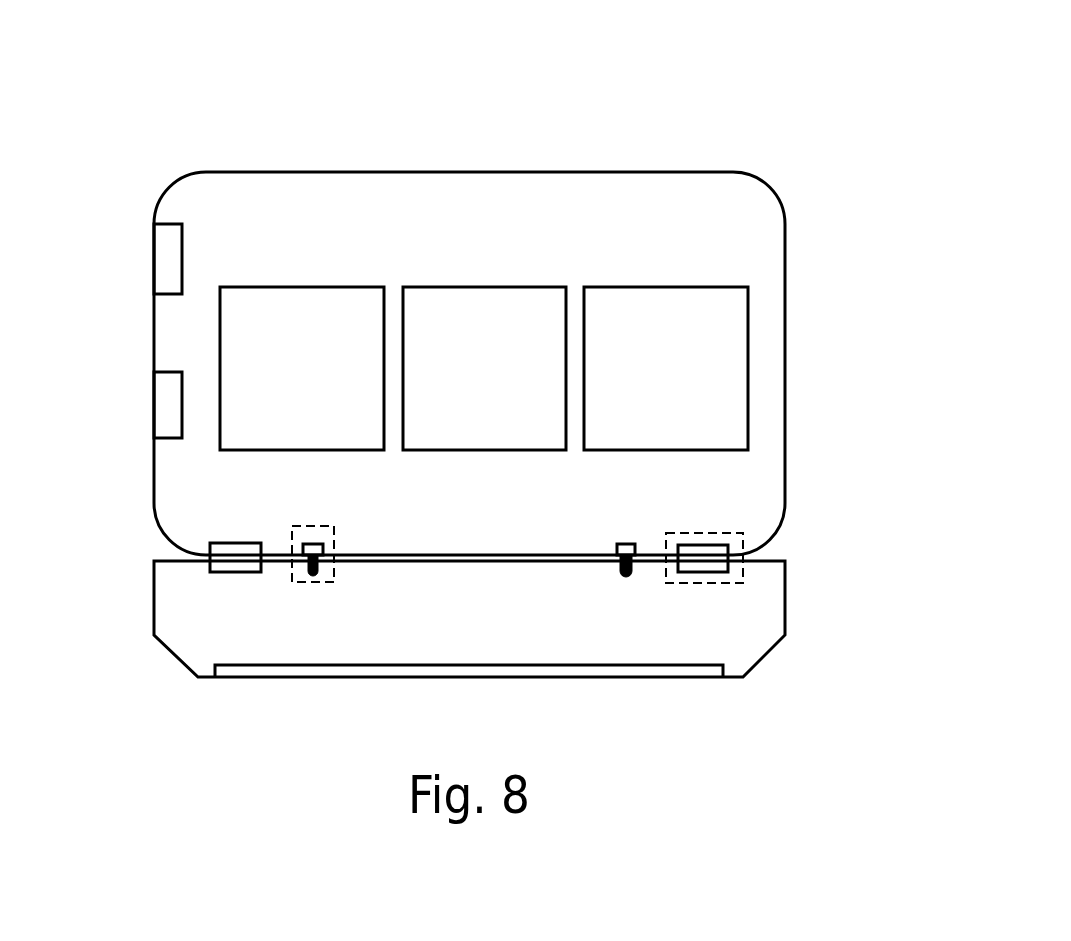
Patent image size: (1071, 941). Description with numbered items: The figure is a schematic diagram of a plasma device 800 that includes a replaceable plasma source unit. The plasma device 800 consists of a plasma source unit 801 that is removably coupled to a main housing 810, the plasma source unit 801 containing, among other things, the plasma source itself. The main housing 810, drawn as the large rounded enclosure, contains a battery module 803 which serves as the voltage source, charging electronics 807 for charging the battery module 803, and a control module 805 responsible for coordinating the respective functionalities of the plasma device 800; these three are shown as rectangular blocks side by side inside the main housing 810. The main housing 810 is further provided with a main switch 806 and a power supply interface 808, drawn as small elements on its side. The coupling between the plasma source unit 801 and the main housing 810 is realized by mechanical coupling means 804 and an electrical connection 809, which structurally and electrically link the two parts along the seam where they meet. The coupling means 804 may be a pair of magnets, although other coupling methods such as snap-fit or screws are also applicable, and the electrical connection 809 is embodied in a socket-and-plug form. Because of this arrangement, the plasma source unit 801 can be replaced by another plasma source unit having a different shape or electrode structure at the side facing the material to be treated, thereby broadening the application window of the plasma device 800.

The plasma device 800 is at (783, 154).
The plasma source unit 801 is at (765, 607).
The battery module 803 is at (686, 381).
The mechanical coupling means 804 is at (745, 557).
The control module 805 is at (504, 381).
The main switch 806 is at (165, 250).
The charging electronics 807 is at (322, 381).
The power supply interface 808 is at (663, 670).
The electrical connection 809 is at (312, 583).
The main housing 810 is at (786, 362).